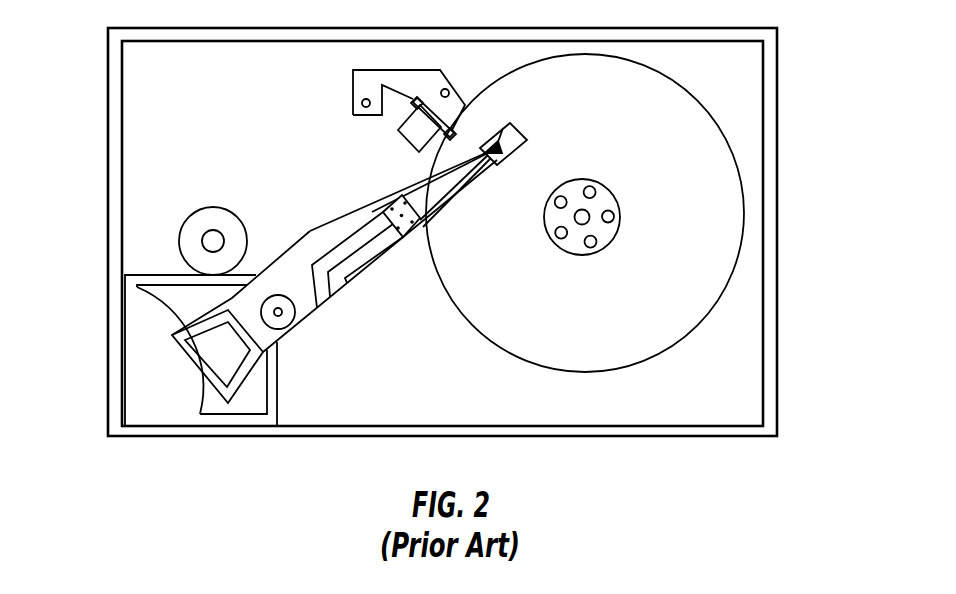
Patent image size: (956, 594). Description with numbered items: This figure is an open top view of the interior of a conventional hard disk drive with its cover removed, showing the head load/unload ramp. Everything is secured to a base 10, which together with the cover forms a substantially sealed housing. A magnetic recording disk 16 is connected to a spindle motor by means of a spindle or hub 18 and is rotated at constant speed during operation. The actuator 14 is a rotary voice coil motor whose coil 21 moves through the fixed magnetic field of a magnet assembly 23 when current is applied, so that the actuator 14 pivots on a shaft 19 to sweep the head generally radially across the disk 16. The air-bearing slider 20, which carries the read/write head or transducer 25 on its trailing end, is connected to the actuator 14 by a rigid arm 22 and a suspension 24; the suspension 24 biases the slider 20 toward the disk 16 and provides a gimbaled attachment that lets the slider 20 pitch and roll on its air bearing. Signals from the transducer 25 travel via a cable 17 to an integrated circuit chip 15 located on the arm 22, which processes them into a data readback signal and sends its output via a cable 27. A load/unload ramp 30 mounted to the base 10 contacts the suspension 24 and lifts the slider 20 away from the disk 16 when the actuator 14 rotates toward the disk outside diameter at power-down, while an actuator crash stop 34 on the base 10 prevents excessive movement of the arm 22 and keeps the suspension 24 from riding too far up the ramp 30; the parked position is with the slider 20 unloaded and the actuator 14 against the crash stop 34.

The base 10 is at (773, 84).
The actuator 14 is at (150, 410).
The integrated circuit chip 15 is at (383, 197).
The magnetic recording disk 16 is at (678, 88).
The cable 17 is at (430, 180).
The spindle or hub 18 is at (617, 198).
The shaft 19 is at (288, 323).
The air-bearing slider 20 is at (508, 127).
The coil 21 is at (170, 335).
The rigid arm 22 is at (357, 285).
The magnet assembly 23 is at (172, 383).
The suspension 24 is at (442, 215).
The read/write head or transducer 25 is at (523, 143).
The cable 27 is at (343, 250).
The load/unload ramp 30 is at (450, 105).
The actuator crash stop 34 is at (206, 206).